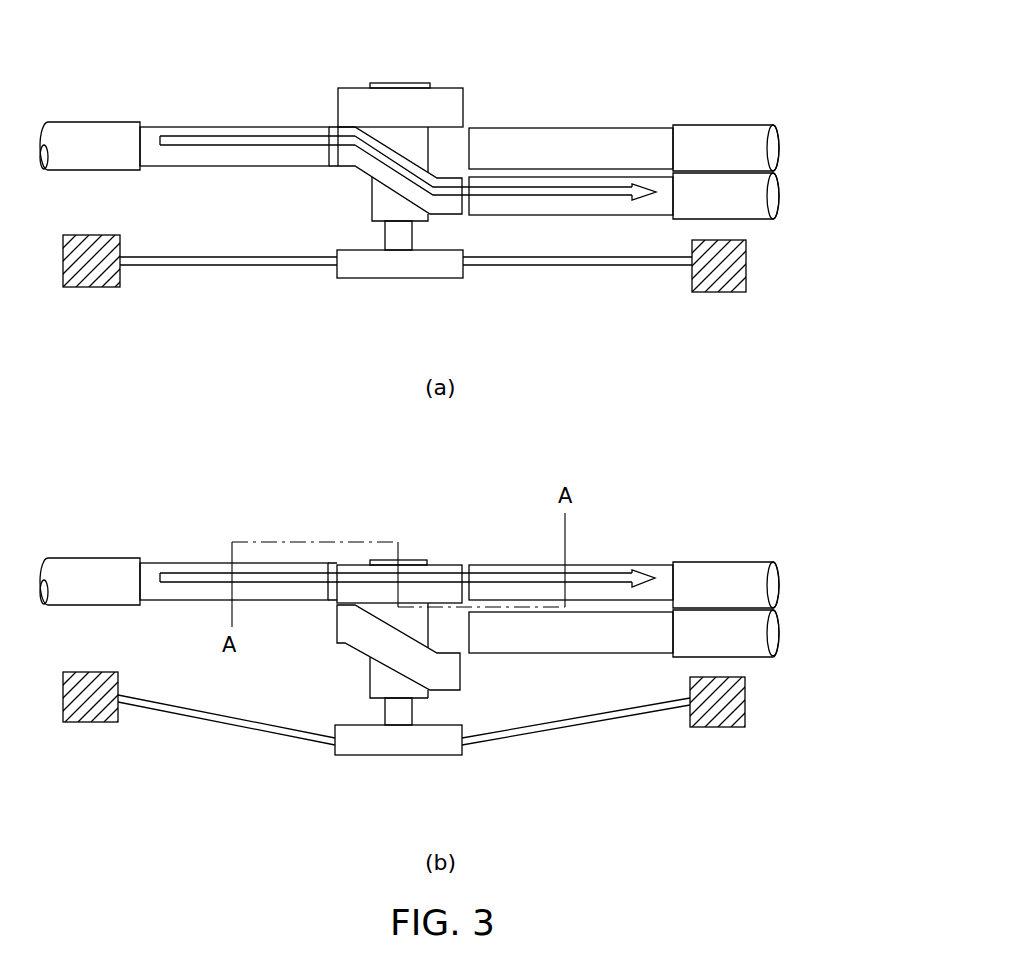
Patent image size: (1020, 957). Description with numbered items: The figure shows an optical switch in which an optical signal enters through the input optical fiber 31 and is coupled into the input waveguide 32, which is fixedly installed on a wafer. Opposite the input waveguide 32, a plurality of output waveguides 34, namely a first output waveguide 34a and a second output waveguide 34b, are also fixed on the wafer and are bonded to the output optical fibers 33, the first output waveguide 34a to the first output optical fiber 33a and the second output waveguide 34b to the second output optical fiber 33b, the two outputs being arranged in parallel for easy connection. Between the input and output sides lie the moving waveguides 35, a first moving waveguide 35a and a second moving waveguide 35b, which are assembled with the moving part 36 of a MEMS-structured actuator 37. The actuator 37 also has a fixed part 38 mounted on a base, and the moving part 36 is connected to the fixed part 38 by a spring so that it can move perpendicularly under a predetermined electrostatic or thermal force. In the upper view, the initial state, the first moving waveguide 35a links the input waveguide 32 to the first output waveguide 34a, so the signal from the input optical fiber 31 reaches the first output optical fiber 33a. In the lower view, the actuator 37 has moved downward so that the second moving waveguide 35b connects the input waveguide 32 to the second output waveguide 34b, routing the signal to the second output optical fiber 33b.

The input optical fiber 31 is at (90, 126).
The input waveguide 32 is at (237, 135).
The output optical fibers 33 is at (845, 143).
The first output optical fiber 33a is at (779, 190).
The second output optical fiber 33b is at (779, 140).
The output waveguides 34 is at (604, 117).
The first output waveguide 34a is at (597, 206).
The second output waveguide 34b is at (532, 146).
The moving waveguides 35 is at (346, 76).
The first moving waveguide 35a is at (357, 168).
The second moving waveguide 35b is at (448, 95).
The moving part 36 is at (358, 220).
The actuator 37 is at (366, 294).
The fixed part 38 is at (103, 288).